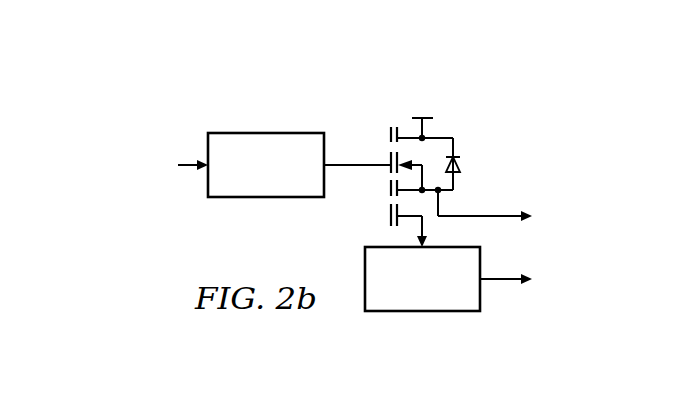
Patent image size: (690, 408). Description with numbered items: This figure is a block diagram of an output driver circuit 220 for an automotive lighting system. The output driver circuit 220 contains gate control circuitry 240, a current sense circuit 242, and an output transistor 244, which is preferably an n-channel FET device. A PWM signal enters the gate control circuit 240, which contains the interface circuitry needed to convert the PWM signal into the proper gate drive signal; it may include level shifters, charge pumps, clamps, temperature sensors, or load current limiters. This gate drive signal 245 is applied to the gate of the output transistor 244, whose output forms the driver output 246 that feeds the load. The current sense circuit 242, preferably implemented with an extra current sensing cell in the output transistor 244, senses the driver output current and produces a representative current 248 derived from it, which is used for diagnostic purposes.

The output driver circuit 220 is at (321, 72).
The gate control circuit 240 is at (266, 132).
The current sense circuit 242 is at (428, 312).
The output transistor 244 is at (428, 117).
The gate line 245 is at (367, 162).
The driver output 246 is at (500, 215).
The representative current 248 is at (500, 281).